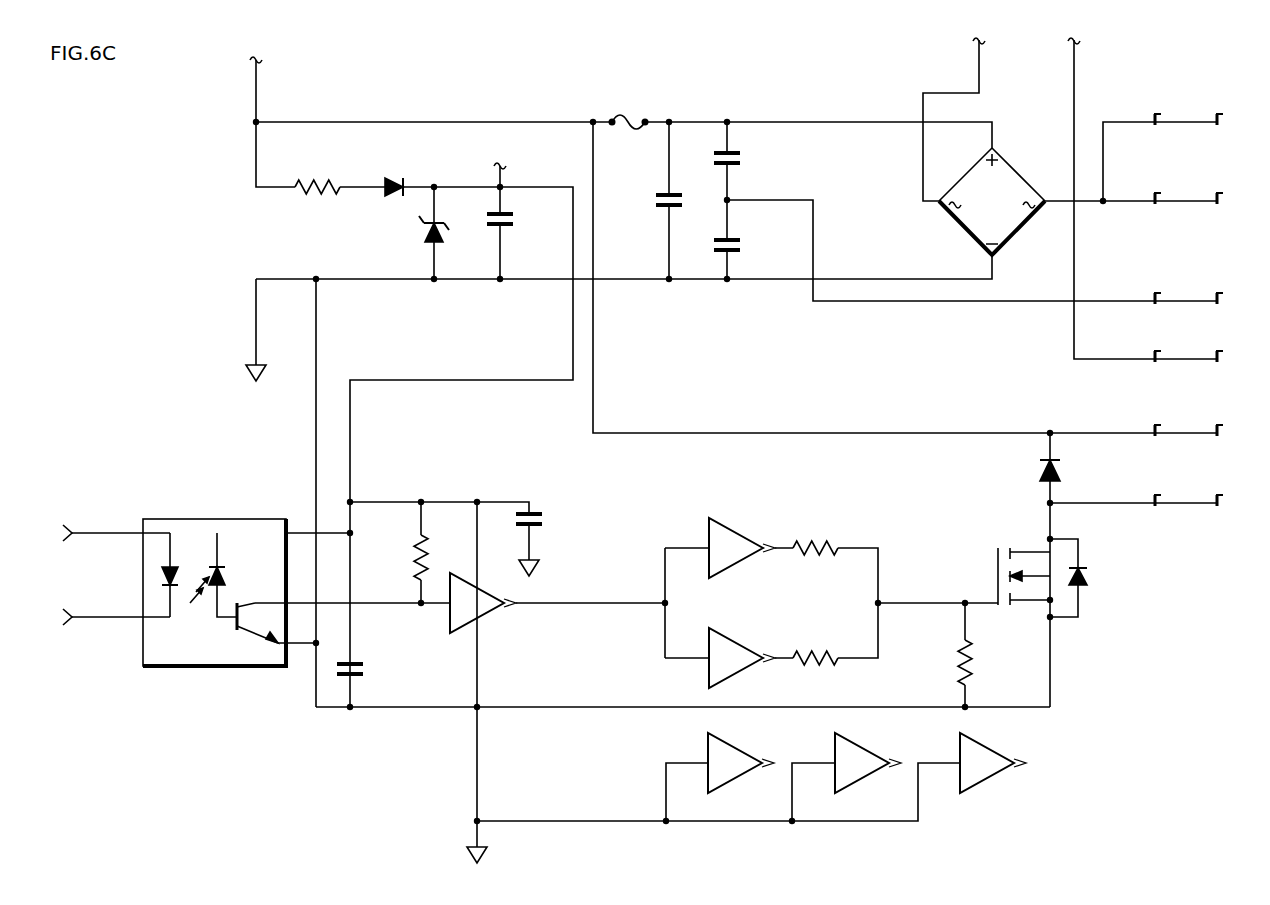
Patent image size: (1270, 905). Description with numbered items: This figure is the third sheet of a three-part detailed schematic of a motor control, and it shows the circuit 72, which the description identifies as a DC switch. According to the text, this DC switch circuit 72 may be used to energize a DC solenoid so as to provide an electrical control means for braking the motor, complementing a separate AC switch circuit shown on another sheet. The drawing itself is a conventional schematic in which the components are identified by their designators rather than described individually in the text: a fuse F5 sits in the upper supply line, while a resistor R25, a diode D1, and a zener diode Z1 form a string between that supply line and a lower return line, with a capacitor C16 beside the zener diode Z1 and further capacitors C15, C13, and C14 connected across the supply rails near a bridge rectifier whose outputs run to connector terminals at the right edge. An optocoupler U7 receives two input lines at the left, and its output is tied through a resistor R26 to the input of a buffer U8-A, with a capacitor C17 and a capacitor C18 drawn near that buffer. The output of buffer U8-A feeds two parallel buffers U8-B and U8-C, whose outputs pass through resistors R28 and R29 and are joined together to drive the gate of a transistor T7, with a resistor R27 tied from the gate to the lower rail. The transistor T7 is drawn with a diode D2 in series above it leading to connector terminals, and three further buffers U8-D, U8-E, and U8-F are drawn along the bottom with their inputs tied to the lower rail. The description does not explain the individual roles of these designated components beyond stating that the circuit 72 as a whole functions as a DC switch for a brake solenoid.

The circuit 72 is at (1082, 669).
The optocoupler U7 is at (214, 579).
The MOSFET transistor T7 is at (1021, 578).
The diode D1 is at (394, 176).
The diode D2 is at (1069, 472).
The zener diode Z1 is at (417, 236).
The fuse F5 is at (629, 136).
The resistor R25 is at (317, 176).
The resistor R26 is at (397, 557).
The resistor R27 is at (942, 662).
The resistor R28 is at (819, 537).
The resistor R29 is at (819, 646).
The capacitor C13 is at (751, 161).
The capacitor C14 is at (751, 245).
The capacitor C15 is at (642, 205).
The capacitor C16 is at (521, 230).
The capacitor C17 is at (371, 670).
The capacitor C18 is at (550, 525).
The buffer U8-A is at (494, 607).
The buffer U8-B is at (742, 538).
The buffer U8-C is at (745, 667).
The buffer U8-D is at (724, 776).
The buffer U8-E is at (852, 775).
The buffer U8-F is at (976, 775).